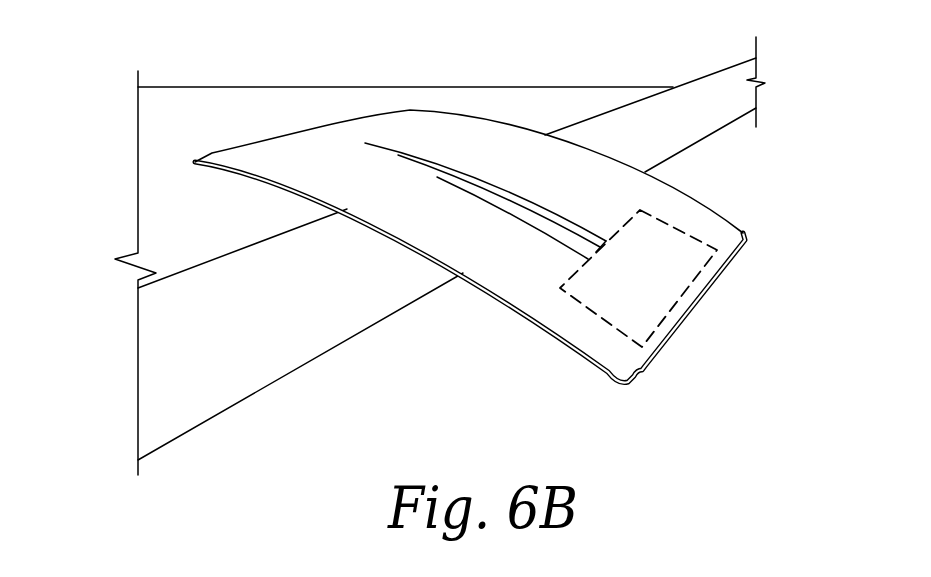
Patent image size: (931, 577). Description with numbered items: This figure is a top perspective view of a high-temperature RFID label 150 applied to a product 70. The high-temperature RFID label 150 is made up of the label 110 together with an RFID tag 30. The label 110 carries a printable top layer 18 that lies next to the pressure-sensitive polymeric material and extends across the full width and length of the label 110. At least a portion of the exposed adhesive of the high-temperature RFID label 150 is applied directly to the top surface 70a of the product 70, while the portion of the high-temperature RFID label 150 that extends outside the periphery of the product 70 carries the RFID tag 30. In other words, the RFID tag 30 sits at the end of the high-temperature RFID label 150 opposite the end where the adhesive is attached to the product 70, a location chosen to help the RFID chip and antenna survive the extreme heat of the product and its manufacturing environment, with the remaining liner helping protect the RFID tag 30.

The product 70 is at (83, 433).
The top surface 70a is at (220, 222).
The high-temperature RFID label 150 is at (746, 157).
The label 110 is at (702, 193).
The RFID tag 30 is at (694, 305).
The printable top layer 18 is at (593, 203).